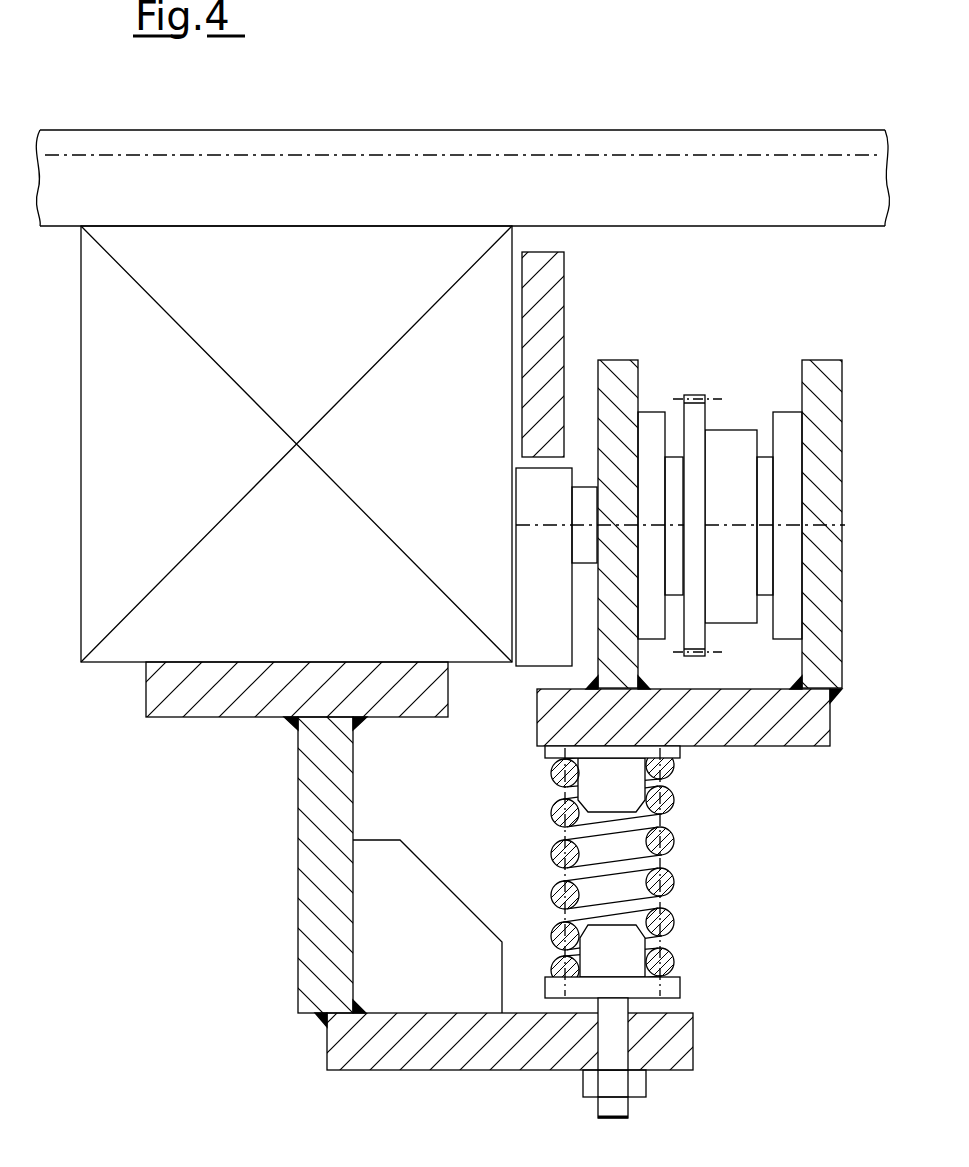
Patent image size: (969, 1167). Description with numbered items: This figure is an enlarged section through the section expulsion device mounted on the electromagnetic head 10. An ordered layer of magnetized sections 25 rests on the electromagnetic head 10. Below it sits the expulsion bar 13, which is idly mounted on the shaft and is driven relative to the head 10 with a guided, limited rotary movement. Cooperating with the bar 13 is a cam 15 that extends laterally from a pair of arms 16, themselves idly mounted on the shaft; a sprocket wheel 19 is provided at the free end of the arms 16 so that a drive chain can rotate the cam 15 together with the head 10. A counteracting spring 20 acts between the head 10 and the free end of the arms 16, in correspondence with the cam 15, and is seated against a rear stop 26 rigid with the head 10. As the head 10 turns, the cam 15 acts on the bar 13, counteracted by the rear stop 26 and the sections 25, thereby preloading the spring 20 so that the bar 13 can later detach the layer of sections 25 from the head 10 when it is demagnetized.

The sections 25 is at (740, 131).
The electromagnetic head 10 is at (127, 643).
The bar 13 is at (552, 268).
The cam 15 is at (537, 642).
The pair of arms 16 is at (617, 372).
The sprocket wheel 19 is at (695, 400).
The counteracting spring 20 is at (675, 847).
The rear stop 26 is at (683, 1040).